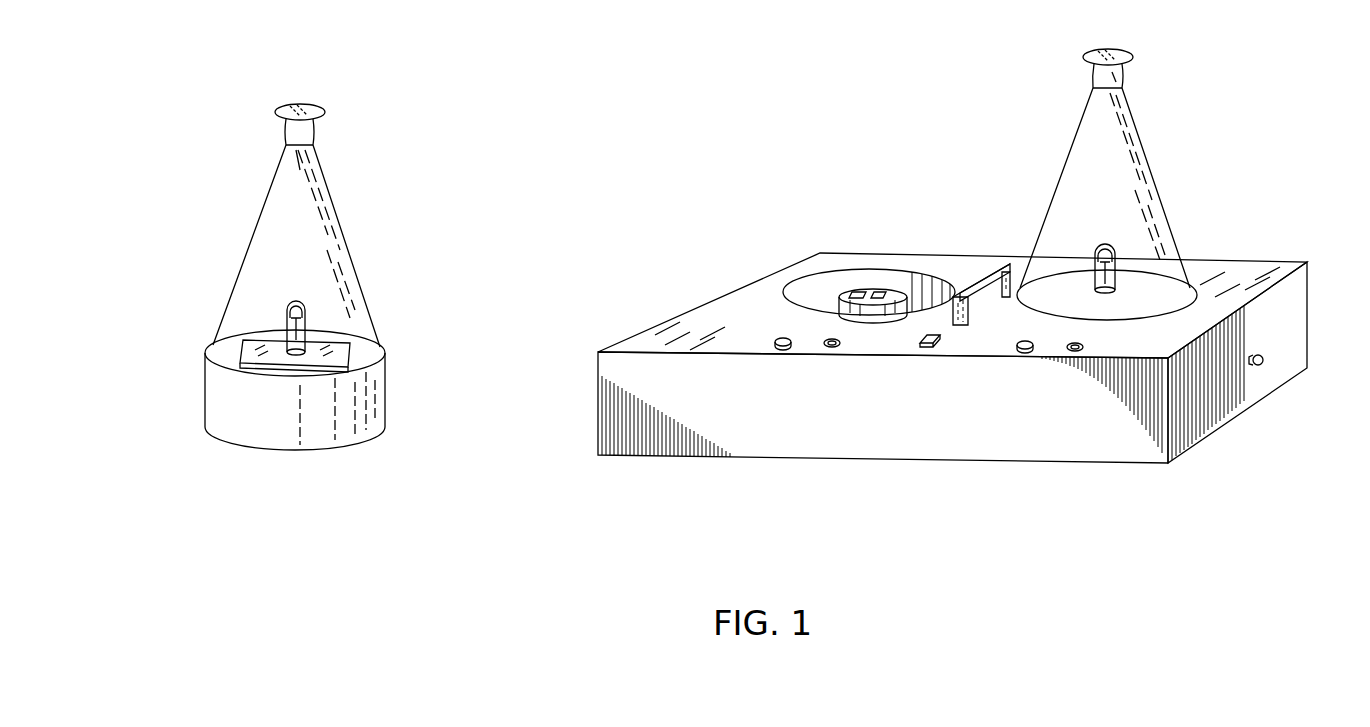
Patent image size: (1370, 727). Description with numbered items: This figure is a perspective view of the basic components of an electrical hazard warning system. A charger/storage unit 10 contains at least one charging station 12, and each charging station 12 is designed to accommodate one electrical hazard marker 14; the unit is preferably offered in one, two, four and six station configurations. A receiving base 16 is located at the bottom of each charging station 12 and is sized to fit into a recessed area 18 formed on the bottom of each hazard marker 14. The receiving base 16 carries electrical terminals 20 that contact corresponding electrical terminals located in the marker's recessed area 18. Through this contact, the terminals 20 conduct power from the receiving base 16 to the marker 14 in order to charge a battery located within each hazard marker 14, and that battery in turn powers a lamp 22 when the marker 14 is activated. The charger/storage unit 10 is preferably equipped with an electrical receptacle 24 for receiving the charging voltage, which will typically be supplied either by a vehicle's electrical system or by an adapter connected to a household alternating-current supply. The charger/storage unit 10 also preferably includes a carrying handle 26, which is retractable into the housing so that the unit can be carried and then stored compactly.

The charger/storage unit 10 is at (532, 400).
The charging station 12 is at (768, 287).
The electrical hazard marker 14 is at (222, 148).
The receiving base 16 is at (848, 292).
The recessed area 18 is at (297, 462).
The electrical terminals 20 is at (878, 292).
The lamp 22 is at (289, 303).
The electrical receptacle 24 is at (1265, 360).
The carrying handle 26 is at (980, 270).